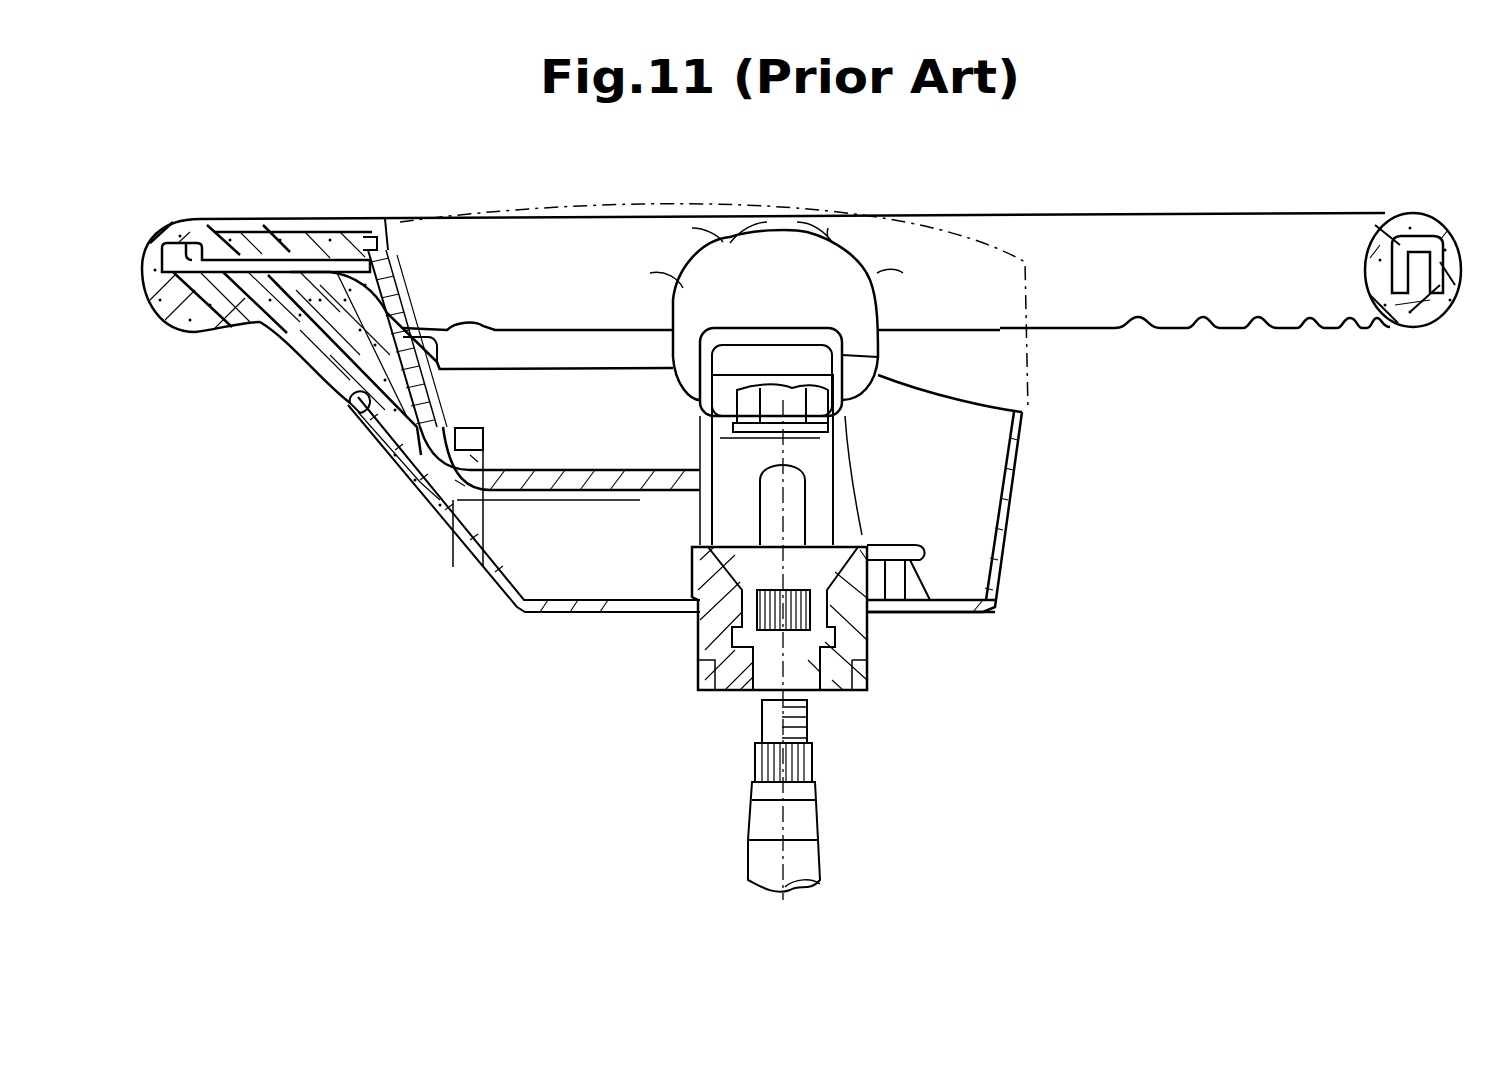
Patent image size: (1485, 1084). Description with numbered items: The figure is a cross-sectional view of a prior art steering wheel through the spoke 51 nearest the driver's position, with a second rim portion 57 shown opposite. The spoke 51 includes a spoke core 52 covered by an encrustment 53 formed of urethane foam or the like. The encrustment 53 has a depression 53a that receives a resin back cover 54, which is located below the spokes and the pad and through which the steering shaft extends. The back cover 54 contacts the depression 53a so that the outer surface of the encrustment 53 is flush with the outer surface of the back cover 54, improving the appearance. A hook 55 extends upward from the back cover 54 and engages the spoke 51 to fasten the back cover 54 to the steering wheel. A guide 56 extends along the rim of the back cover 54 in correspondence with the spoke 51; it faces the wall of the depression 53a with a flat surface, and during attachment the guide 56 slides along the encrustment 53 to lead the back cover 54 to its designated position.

The spoke 51 is at (312, 230).
The spoke core 52 is at (315, 280).
The encrustment 53 is at (317, 358).
The depression 53a is at (357, 428).
The back cover 54 is at (433, 528).
The hook 55 is at (483, 437).
The guide 56 is at (372, 445).
The rim portion 57 is at (1245, 242).